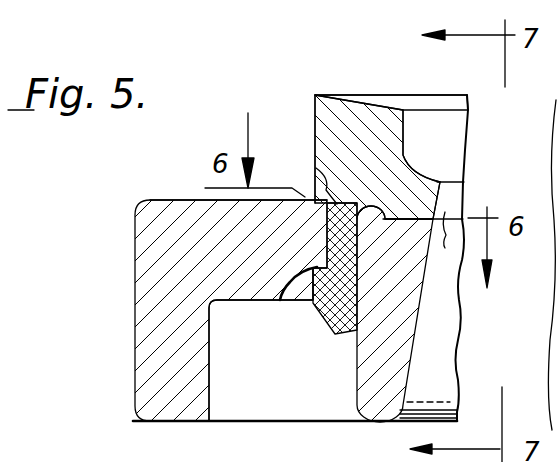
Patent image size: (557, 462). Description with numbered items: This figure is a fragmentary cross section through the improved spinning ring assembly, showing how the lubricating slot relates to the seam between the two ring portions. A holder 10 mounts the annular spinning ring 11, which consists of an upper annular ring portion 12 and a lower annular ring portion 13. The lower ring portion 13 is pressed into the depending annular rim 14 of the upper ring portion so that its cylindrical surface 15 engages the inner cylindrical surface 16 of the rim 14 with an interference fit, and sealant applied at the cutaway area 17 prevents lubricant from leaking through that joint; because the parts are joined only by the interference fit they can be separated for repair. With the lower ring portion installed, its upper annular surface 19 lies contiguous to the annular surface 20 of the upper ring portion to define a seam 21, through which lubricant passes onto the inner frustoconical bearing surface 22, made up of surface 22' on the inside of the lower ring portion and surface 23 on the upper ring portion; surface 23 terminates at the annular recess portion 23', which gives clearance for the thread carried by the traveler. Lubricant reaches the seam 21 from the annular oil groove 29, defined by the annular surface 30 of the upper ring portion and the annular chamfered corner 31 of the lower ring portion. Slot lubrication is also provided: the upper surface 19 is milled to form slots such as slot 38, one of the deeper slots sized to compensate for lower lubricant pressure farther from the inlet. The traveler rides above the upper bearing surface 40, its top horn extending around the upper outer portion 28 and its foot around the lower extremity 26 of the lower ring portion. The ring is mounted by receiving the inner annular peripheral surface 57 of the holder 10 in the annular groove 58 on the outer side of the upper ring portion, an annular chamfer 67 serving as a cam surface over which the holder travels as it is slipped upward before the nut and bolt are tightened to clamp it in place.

The holder 10 is at (140, 202).
The annular groove 58 is at (300, 208).
The annular chamfered corner 31 is at (261, 344).
The inner annular peripheral surface 57 is at (320, 288).
The upper outer portion 28 is at (315, 95).
The upper bearing surface 40 is at (353, 95).
The upper annular ring portion 12 is at (413, 63).
The annular oil groove 29 is at (406, 146).
The annular recess portion 23' is at (464, 122).
The slot 38 is at (415, 162).
The surface 23 is at (488, 163).
The upper annular surface 19 is at (466, 195).
The seam 21 is at (462, 213).
The annular surface 20 is at (443, 236).
The lower annular ring portion 13 is at (352, 382).
The depending annular rim 14 is at (308, 292).
The inner cylindrical surface 16 is at (328, 322).
The annular chamfer 67 is at (324, 356).
The cutaway area 17 is at (341, 335).
The annular surface 30 is at (320, 175).
The spinning ring 11 is at (407, 352).
The cylindrical surface 15 is at (410, 296).
The inner frustoconical bearing surface 22 is at (459, 321).
The surface 22' is at (459, 370).
The lower extremity 26 is at (377, 410).